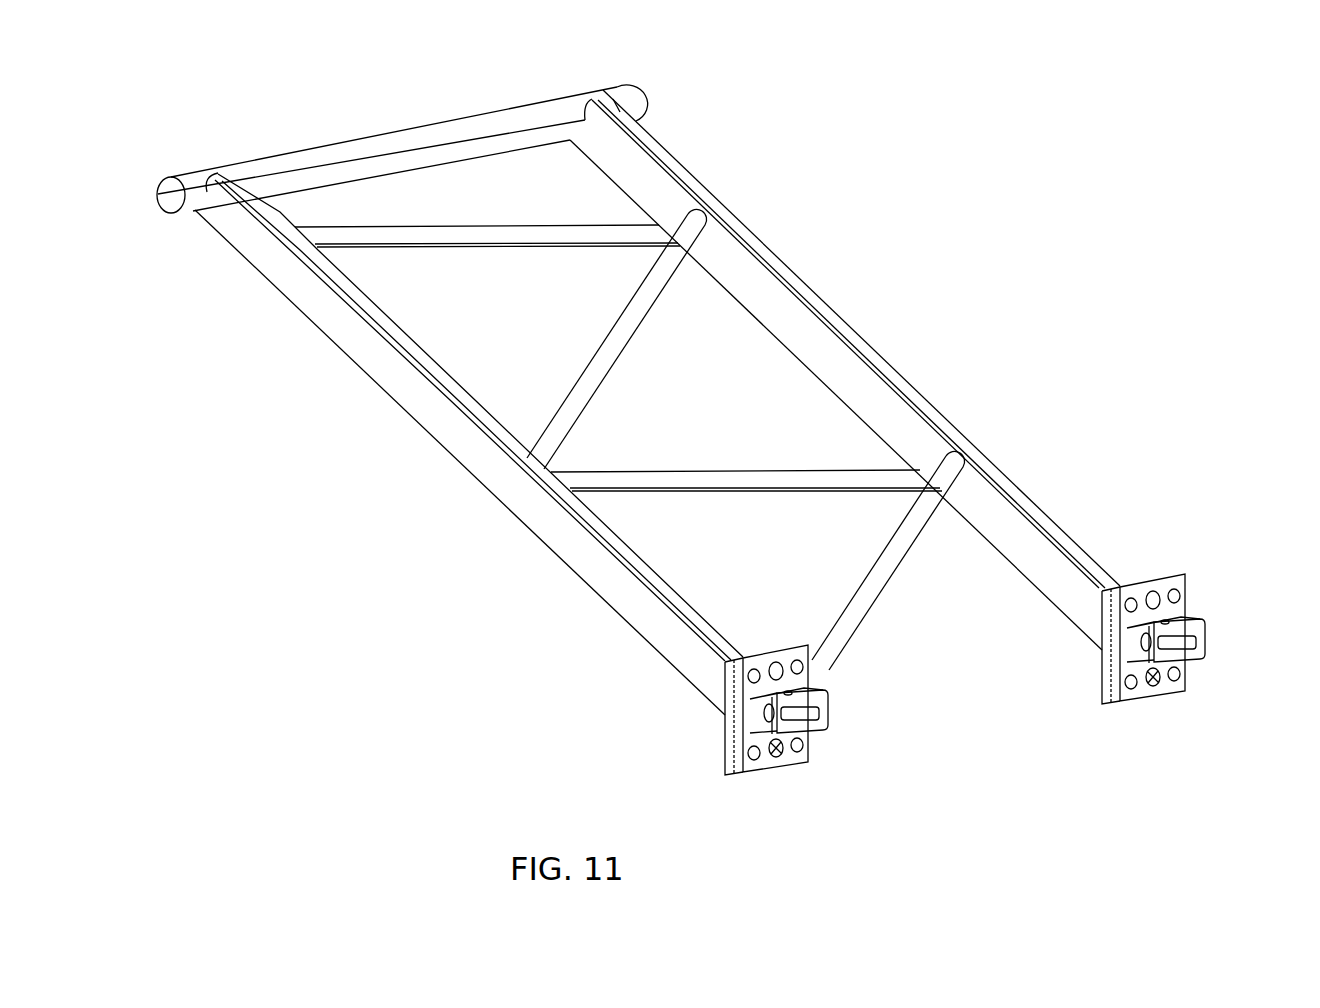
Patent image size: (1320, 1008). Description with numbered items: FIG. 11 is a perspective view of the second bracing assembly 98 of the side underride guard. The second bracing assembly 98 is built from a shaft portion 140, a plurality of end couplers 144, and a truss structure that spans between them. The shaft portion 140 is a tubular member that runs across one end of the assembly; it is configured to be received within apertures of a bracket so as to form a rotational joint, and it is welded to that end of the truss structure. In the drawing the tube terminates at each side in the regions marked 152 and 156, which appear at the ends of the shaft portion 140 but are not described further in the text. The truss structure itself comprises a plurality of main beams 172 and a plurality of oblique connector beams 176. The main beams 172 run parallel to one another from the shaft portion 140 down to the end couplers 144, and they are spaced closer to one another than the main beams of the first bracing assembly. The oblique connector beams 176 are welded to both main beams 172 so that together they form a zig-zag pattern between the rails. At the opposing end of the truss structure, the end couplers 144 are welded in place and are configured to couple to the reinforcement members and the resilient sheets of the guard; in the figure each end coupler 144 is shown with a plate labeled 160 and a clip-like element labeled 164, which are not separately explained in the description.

The second bracing assembly 98 is at (893, 313).
The shaft portion 140 is at (470, 127).
The tube end 152 is at (619, 92).
The tube end 156 is at (166, 177).
The main beams 172 is at (818, 295).
The oblique connector beams 176 is at (500, 236).
The mounting plate 160 is at (741, 676).
The clip 164 is at (818, 740).
The end couplers 144 is at (955, 690).